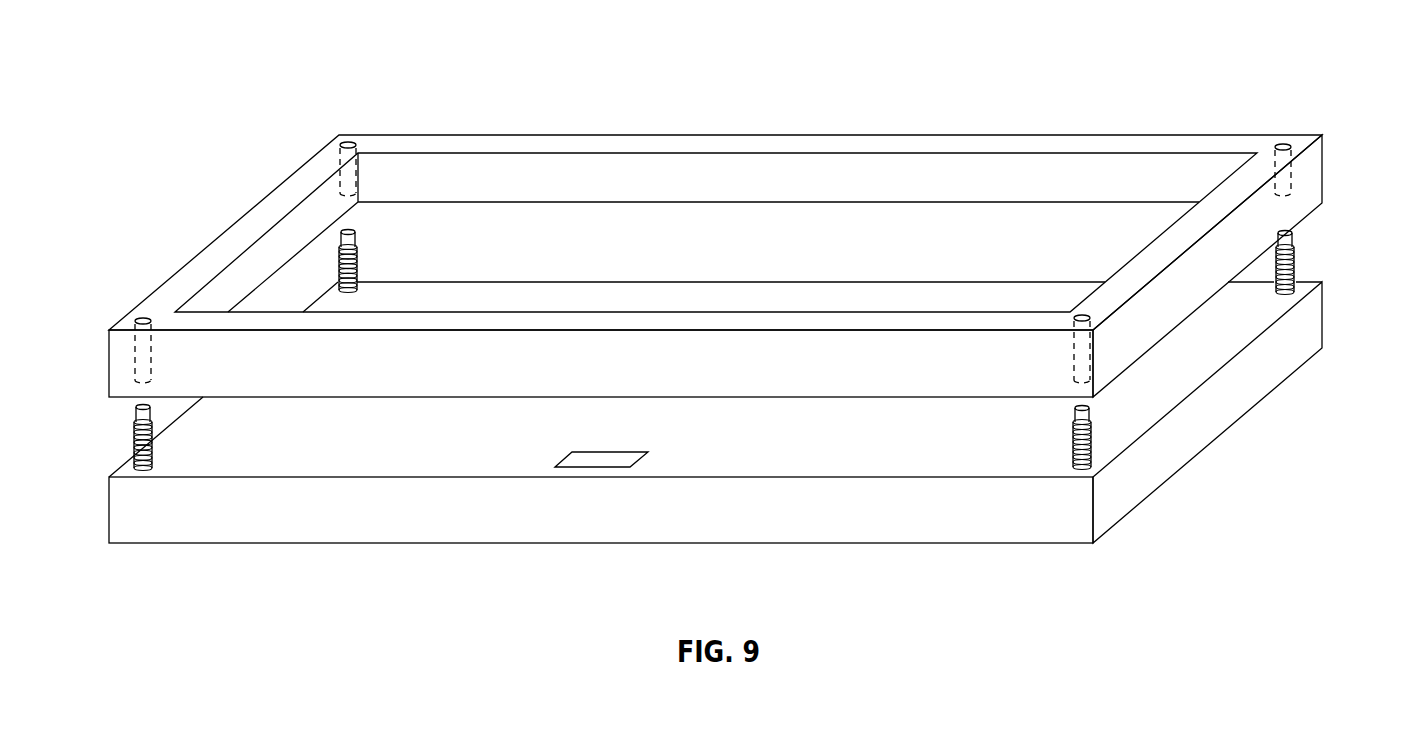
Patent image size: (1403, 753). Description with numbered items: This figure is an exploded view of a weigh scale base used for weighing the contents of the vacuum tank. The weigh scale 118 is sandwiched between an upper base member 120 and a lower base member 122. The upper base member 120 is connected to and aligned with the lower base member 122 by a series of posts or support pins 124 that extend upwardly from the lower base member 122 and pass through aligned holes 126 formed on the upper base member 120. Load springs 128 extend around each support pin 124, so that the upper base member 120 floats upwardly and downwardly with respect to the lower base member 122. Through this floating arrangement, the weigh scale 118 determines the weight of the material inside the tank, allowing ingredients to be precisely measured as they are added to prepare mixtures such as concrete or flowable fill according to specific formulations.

The weigh scale 118 is at (596, 453).
The upper base member 120 is at (695, 177).
The lower base member 122 is at (360, 522).
The support pin 124 is at (357, 238).
The aligned hole 126 is at (347, 139).
The load spring 128 is at (358, 273).